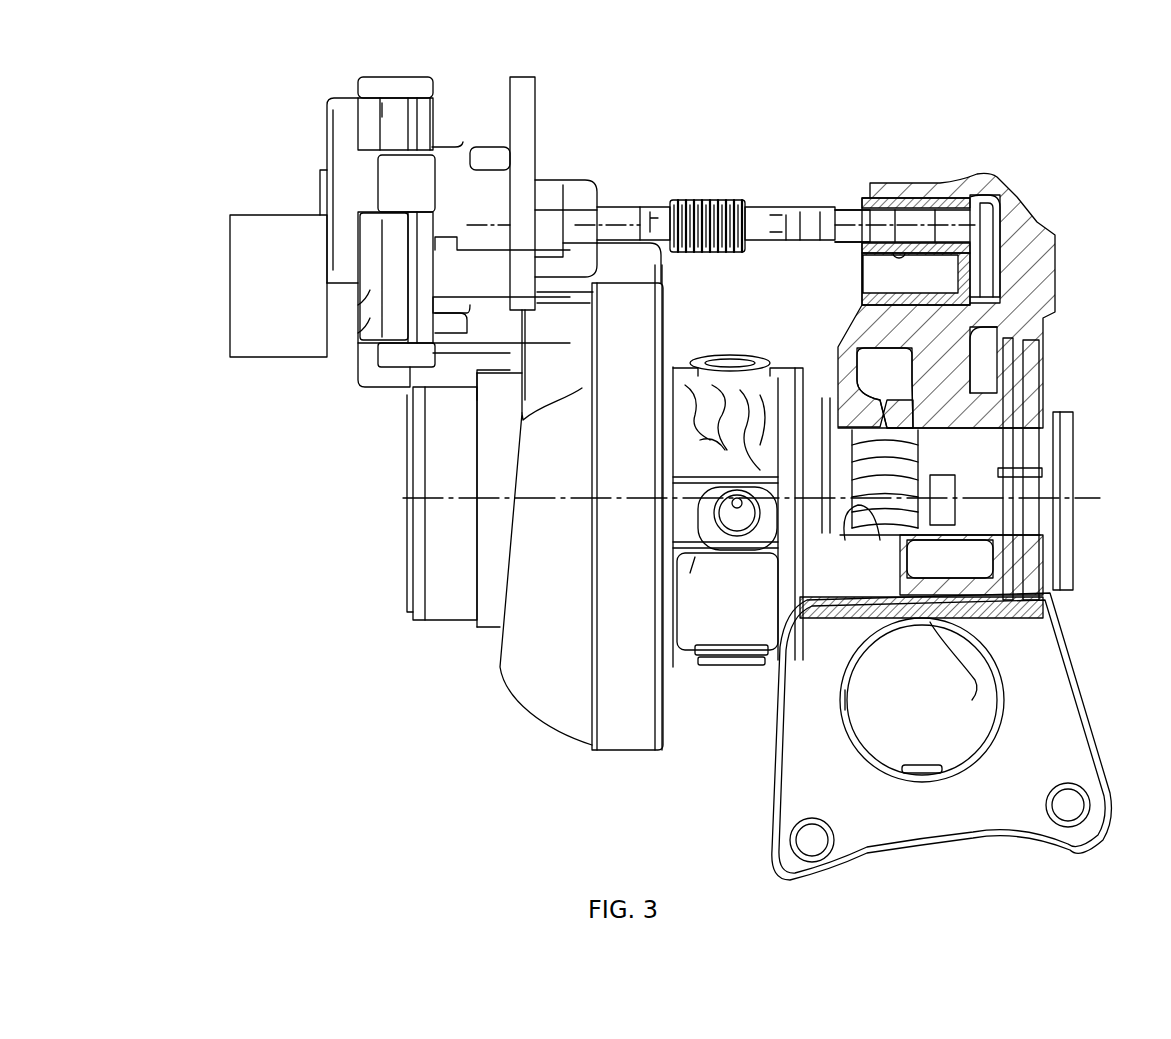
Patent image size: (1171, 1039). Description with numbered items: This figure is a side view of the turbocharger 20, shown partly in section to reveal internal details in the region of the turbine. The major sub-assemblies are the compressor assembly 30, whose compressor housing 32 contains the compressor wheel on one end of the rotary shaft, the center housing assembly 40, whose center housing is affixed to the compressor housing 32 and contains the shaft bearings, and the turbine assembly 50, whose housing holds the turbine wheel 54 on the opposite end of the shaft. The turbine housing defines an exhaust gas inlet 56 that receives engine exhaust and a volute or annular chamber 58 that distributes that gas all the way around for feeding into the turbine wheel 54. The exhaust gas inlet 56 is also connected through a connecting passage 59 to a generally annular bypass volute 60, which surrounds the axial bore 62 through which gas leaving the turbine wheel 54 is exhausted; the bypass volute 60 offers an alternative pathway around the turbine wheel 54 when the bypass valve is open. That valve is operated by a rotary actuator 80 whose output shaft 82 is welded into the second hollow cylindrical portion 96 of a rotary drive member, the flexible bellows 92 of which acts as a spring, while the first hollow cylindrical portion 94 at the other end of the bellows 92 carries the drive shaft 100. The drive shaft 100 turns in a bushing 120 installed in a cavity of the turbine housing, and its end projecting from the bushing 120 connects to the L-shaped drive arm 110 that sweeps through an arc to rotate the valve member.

The turbocharger 20 is at (323, 648).
The compressor assembly 30 is at (436, 628).
The compressor housing 32 is at (545, 700).
The center housing assembly 40 is at (712, 664).
The turbine assembly 50 is at (905, 178).
The turbine wheel 54 is at (905, 465).
The exhaust gas inlet 56 is at (937, 707).
The volute or annular chamber 58 is at (885, 373).
The connecting passage 59 is at (978, 655).
The bypass volute 60 is at (968, 368).
The axial bore 62 is at (1003, 435).
The rotary actuator 80 is at (496, 195).
The output shaft 82 is at (612, 222).
The bellows 92 is at (714, 200).
The first hollow cylindrical portion 94 is at (760, 212).
The second hollow cylindrical portion 96 is at (655, 205).
The drive shaft 100 is at (845, 232).
The drive arm 110 is at (985, 258).
The bushing 120 is at (930, 200).